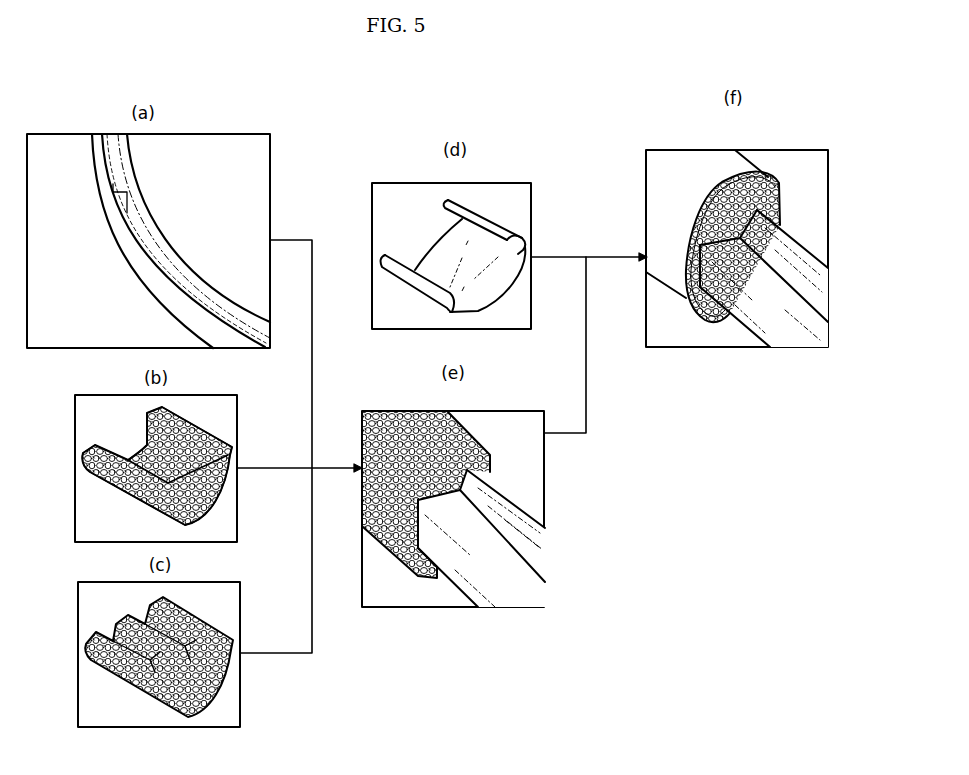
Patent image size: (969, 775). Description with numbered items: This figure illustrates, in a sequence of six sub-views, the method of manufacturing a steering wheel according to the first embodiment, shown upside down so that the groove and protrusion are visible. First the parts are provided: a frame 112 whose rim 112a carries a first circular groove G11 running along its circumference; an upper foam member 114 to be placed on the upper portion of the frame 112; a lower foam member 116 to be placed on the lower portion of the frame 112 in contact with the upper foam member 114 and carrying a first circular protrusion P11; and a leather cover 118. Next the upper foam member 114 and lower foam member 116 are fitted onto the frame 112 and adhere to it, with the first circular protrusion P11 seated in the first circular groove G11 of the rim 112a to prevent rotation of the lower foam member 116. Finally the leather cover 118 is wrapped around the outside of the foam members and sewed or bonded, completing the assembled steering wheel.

The frame 112 is at (121, 240).
The rim 112a is at (160, 217).
The first circular groove G11 is at (130, 163).
The upper foam member 114 is at (147, 436).
The lower foam member 116 is at (193, 712).
The leather cover 118 is at (497, 226).
The first circular protrusion P11 is at (127, 617).